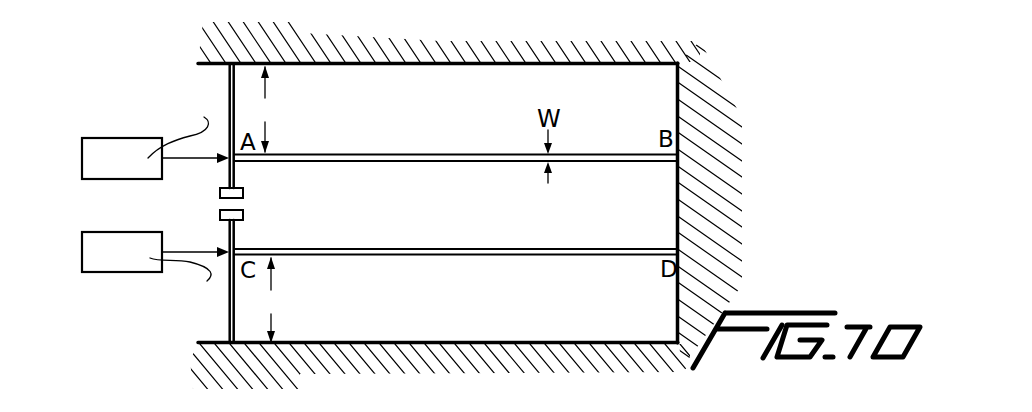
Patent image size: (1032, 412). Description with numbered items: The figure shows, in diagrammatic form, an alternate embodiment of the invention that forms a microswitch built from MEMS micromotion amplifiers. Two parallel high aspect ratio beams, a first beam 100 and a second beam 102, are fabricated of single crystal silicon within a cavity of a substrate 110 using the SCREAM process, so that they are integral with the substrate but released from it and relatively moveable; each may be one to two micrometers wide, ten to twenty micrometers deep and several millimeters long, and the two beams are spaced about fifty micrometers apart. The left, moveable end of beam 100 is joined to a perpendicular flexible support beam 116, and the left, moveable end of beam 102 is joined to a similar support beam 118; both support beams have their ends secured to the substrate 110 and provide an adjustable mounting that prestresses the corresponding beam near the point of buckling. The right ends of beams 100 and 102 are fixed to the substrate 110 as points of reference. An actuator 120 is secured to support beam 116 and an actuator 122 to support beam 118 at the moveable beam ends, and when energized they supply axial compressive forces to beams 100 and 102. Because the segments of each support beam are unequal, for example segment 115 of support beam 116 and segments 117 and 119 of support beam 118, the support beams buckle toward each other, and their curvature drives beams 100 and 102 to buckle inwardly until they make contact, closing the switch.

The first high aspect ratio beam 100 is at (402, 153).
The second high aspect ratio beam 102 is at (450, 248).
The substrate 110 is at (220, 194).
The segment of beam 116 115 is at (269, 109).
The perpendicular support beam 116 is at (220, 97).
The segment of beam 118 117 is at (271, 300).
The perpendicular support beam 118 is at (218, 305).
The segment of beam 118 119 is at (247, 249).
The actuator 120 is at (82, 158).
The actuator 122 is at (82, 252).